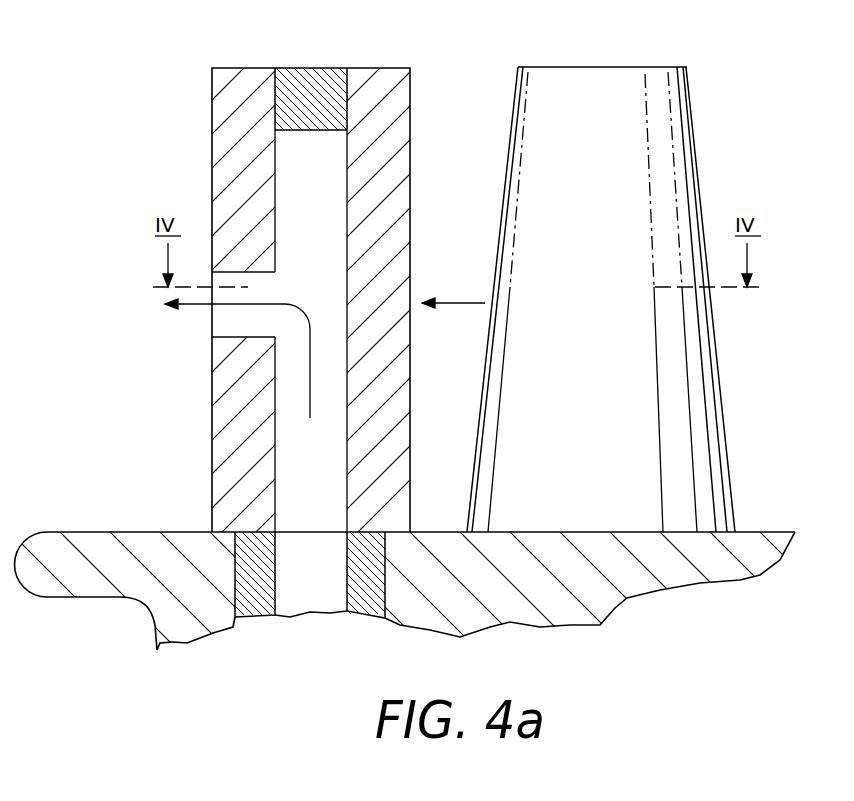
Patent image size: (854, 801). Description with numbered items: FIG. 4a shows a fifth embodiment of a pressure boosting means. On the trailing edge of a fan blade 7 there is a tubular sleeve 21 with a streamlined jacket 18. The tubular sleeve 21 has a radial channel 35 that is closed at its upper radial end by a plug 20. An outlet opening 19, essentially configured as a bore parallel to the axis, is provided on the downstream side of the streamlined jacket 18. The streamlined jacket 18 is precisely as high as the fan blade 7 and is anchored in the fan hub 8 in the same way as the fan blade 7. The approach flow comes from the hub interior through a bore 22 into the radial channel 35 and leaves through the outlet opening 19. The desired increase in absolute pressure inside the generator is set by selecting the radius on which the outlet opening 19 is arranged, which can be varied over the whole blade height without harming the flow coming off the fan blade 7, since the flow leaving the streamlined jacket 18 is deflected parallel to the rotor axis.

The fan blade 7 is at (677, 138).
The fan hub 8 is at (598, 595).
The streamlined jacket 18 is at (222, 120).
The outlet opening 19 is at (222, 318).
The plug 20 is at (310, 78).
The tubular sleeve 21 is at (275, 462).
The bore 22 is at (271, 617).
The radial channel 35 is at (322, 488).